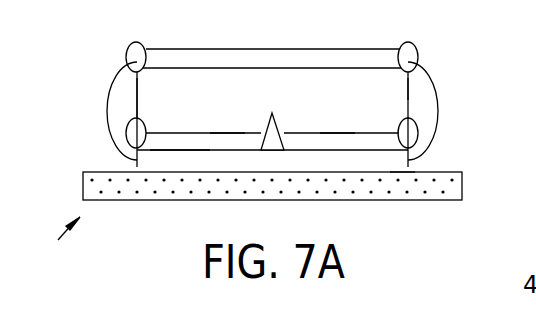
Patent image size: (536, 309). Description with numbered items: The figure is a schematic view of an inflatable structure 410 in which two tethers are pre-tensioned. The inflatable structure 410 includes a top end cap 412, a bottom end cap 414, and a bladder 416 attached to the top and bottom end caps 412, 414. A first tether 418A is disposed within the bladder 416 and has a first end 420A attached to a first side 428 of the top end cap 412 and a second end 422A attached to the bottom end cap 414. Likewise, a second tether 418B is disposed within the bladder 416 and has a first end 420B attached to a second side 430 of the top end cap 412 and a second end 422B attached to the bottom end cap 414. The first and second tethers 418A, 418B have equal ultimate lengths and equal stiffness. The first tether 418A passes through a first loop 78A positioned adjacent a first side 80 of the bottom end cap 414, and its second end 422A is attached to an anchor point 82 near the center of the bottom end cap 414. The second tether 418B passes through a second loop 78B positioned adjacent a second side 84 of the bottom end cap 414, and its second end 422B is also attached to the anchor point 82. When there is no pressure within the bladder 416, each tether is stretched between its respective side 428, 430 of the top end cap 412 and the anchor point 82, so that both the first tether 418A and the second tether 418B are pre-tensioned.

The inflatable structure 410 is at (58, 240).
The top end cap 412 is at (235, 58).
The bottom end cap 414 is at (185, 158).
The bladder 416 is at (108, 100).
The first tether 418A is at (133, 107).
The second tether 418B is at (410, 93).
The first end of first tether 420A is at (133, 78).
The first end of second tether 420B is at (410, 80).
The second end of first tether 422A is at (223, 133).
The second end of second tether 422B is at (337, 133).
The first side of top end cap 428 is at (147, 58).
The second side of top end cap 430 is at (402, 53).
The first loop 78A is at (127, 133).
The second loop 78B is at (418, 133).
The first side of bottom end cap 80 is at (137, 168).
The anchor point 82 is at (270, 139).
The second side of bottom end cap 84 is at (401, 172).